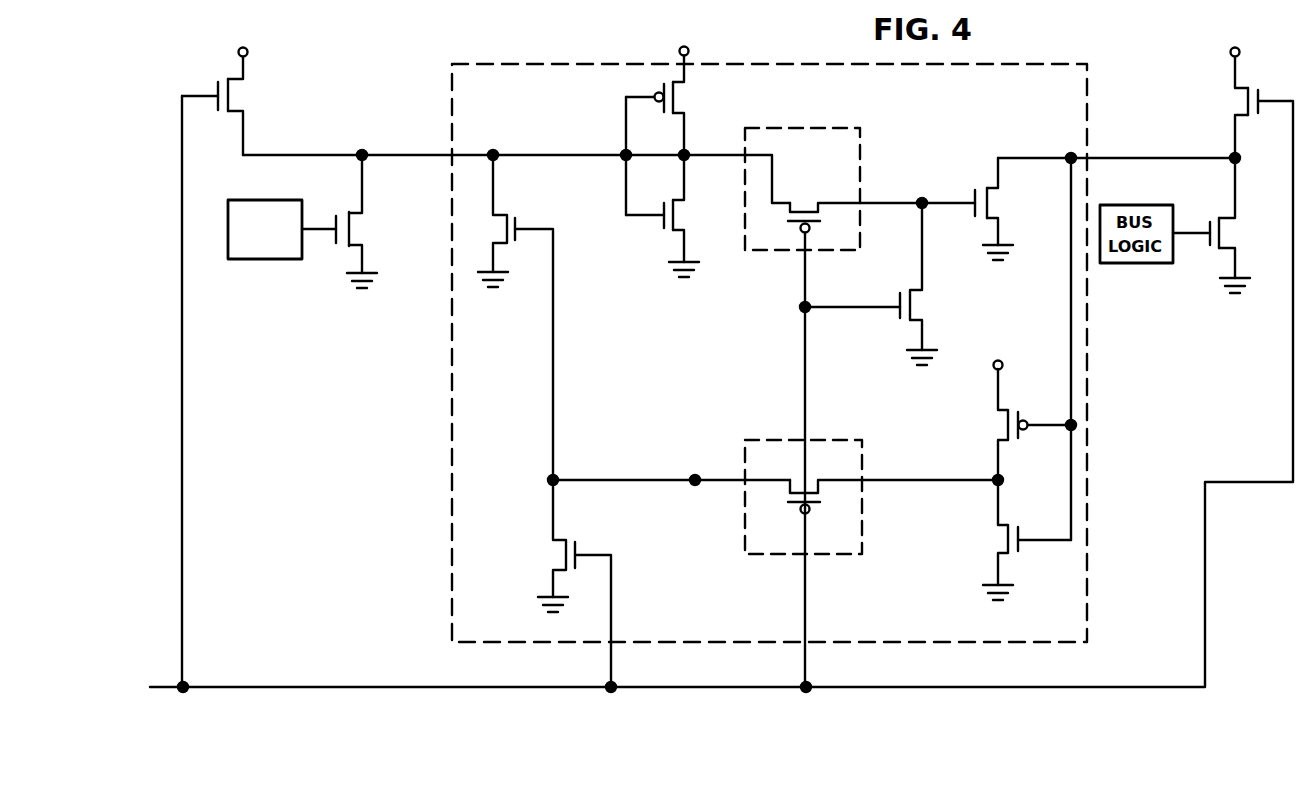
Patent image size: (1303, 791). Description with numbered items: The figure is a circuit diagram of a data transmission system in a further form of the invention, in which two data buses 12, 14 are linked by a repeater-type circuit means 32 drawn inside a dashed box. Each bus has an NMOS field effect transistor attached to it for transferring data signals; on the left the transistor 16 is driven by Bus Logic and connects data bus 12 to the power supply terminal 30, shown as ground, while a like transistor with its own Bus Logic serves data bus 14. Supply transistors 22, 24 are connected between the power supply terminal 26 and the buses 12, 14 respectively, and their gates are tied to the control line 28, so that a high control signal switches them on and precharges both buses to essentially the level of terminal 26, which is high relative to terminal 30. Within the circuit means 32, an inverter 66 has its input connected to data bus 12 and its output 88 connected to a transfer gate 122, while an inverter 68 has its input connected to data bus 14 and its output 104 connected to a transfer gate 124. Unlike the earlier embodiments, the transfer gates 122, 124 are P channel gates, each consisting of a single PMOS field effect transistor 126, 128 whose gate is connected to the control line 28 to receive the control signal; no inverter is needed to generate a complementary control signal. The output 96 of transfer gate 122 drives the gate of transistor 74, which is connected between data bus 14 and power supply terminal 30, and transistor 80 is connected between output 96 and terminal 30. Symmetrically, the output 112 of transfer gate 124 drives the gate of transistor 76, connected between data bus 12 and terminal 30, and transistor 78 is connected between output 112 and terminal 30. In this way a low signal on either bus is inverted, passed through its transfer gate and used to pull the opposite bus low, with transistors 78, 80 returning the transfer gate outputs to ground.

The data bus 12 is at (323, 153).
The data bus 14 is at (1143, 157).
The NMOS field effect transistor 16 is at (354, 244).
The NMOS field effect transistor 22 is at (240, 111).
The NMOS field effect transistor 24 is at (1243, 111).
The power supply terminal 26 is at (247, 48).
The control line 28 is at (168, 690).
The power supply terminal 30 is at (352, 279).
The circuit means 32 is at (576, 58).
The inverter 66 is at (616, 110).
The inverter 68 is at (984, 514).
The NMOS field effect transistor 74 is at (994, 216).
The NMOS field effect transistor 76 is at (500, 215).
The NMOS field effect transistor 78 is at (550, 562).
The NMOS field effect transistor 80 is at (917, 318).
The output 88 is at (690, 156).
The output 96 is at (920, 200).
The output 104 is at (1004, 481).
The output 112 is at (692, 486).
The transfer gate 122 is at (833, 384).
The transfer gate 124 is at (850, 469).
The PMOS field effect transistor 126 is at (855, 425).
The PMOS field effect transistor 128 is at (786, 496).